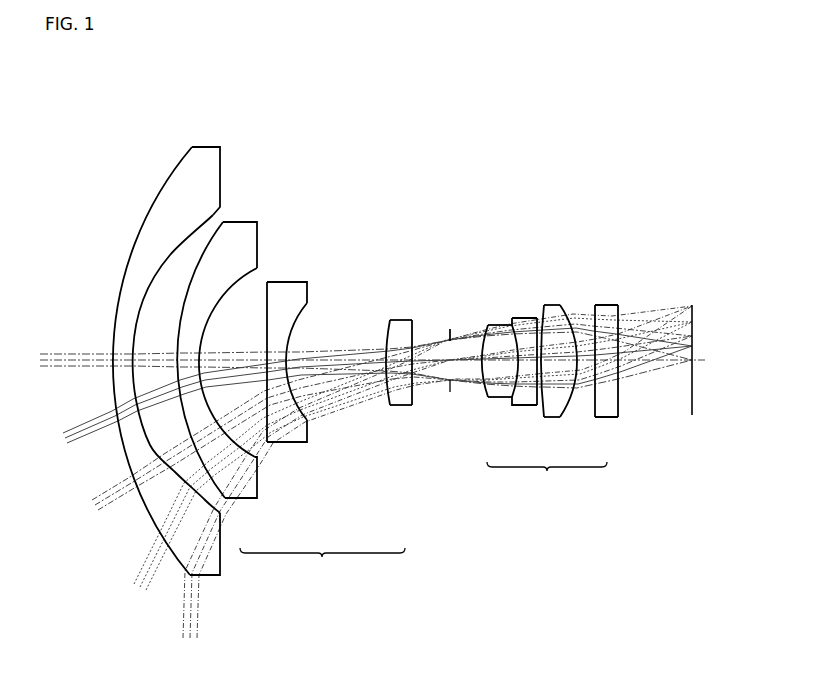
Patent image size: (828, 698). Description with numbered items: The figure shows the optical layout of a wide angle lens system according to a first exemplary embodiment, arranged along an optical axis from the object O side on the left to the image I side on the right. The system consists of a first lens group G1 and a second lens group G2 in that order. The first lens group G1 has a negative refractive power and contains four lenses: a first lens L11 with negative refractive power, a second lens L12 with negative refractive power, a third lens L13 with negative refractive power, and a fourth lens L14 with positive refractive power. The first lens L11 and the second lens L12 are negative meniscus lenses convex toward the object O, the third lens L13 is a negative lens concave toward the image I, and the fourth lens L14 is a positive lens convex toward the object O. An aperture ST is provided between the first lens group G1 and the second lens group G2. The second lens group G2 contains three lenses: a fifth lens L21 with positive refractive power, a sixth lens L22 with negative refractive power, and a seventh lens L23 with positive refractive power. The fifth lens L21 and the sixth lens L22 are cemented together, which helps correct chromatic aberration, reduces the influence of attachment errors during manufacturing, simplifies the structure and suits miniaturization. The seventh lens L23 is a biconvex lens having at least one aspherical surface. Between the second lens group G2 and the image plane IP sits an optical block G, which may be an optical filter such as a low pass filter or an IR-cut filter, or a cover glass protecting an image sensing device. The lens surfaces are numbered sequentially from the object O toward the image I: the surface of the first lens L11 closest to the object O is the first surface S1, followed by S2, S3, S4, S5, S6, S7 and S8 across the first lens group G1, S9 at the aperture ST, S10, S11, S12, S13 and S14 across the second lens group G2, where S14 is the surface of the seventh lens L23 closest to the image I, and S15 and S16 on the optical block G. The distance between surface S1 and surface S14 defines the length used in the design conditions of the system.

The first surface S1 is at (177, 163).
The second surface S2 is at (215, 214).
The third surface S3 is at (224, 222).
The fourth surface S4 is at (257, 268).
The fifth surface S5 is at (268, 282).
The sixth surface S6 is at (308, 322).
The seventh surface S7 is at (391, 320).
The eighth surface S8 is at (413, 320).
The ninth surface S9 is at (449, 334).
The tenth surface S10 is at (488, 325).
The eleventh surface S11 is at (513, 319).
The twelfth surface S12 is at (538, 318).
The thirteenth surface S13 is at (546, 312).
The fourteenth surface S14 is at (561, 307).
The fifteenth surface S15 is at (596, 306).
The sixteenth surface S16 is at (619, 306).
The aperture ST is at (449, 384).
The first lens L11 is at (192, 343).
The second lens L12 is at (246, 360).
The third lens L13 is at (314, 395).
The fourth lens L14 is at (400, 412).
The fifth lens L21 is at (500, 372).
The sixth lens L22 is at (539, 353).
The seventh lens L23 is at (575, 353).
The first lens group G1 is at (272, 346).
The second lens group G2 is at (537, 369).
The optical block G is at (622, 365).
The image plane IP is at (693, 405).
The object O is at (22, 363).
The image I is at (714, 362).